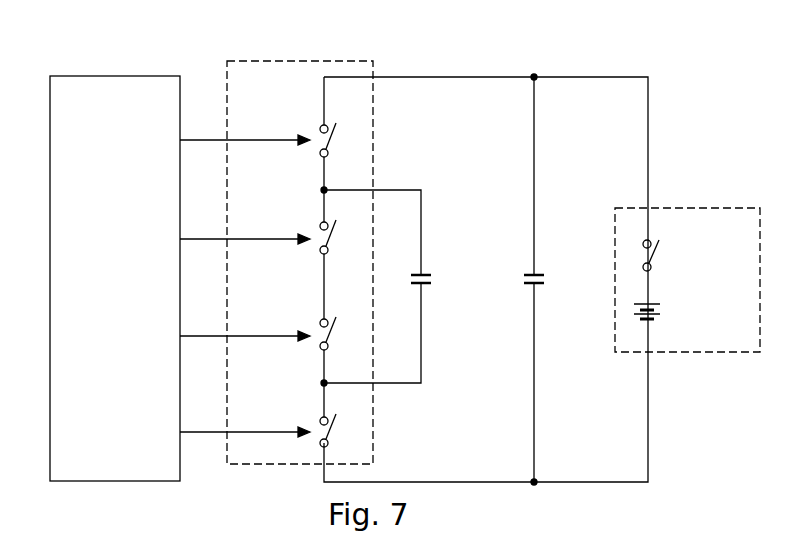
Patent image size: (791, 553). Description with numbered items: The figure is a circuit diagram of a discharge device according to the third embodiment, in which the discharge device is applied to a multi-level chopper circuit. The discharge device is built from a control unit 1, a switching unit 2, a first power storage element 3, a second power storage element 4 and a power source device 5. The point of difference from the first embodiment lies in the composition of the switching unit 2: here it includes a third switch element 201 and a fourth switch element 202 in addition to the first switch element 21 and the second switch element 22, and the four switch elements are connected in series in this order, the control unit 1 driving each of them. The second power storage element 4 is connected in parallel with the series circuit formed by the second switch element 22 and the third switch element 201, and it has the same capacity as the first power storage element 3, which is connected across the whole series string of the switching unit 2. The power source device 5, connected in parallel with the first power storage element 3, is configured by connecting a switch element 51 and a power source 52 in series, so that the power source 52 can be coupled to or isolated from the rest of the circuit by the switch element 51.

The control unit 1 is at (60, 75).
The switching unit 2 is at (268, 60).
The first switch element 21 is at (320, 125).
The second switch element 22 is at (320, 222).
The third switch element 201 is at (320, 320).
The fourth switch element 202 is at (320, 418).
The first power storage element 3 is at (535, 273).
The second power storage element 4 is at (422, 273).
The power source device 5 is at (714, 207).
The switch element 51 is at (651, 267).
The power source 52 is at (657, 305).